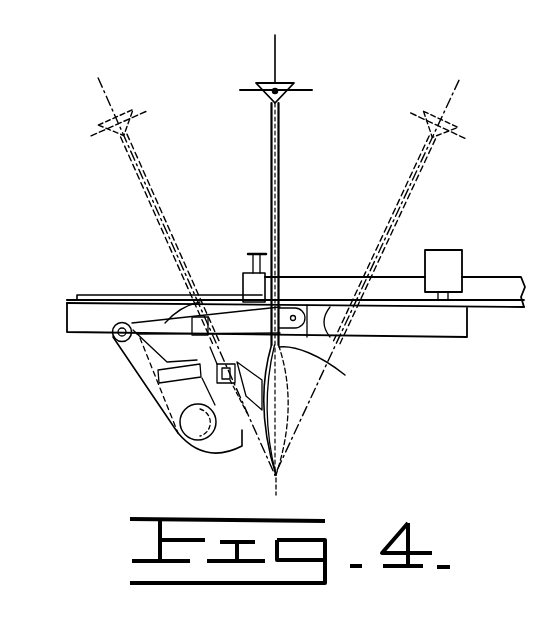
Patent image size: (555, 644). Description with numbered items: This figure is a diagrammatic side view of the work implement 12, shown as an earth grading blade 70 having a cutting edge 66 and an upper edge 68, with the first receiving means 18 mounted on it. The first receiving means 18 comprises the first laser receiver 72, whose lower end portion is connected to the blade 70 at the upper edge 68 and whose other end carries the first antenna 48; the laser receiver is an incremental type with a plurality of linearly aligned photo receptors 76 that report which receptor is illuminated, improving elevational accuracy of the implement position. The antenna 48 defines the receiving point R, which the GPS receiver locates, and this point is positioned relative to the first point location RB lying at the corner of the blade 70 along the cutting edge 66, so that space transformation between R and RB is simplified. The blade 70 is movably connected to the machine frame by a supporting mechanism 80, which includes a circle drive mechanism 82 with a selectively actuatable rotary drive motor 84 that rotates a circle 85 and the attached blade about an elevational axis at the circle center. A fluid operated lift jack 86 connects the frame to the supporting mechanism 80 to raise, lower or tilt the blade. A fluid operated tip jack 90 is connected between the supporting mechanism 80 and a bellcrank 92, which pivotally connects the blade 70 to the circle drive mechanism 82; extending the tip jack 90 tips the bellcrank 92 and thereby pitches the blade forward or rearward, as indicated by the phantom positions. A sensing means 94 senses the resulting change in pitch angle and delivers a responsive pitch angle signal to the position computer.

The first antenna 48 is at (256, 84).
The receiving point R is at (278, 82).
The first laser receiver 72 is at (279, 138).
The first receiving means 18 is at (286, 173).
The photo receptors 76 is at (279, 212).
The lift jack 86 is at (248, 273).
The tip jack 90 is at (220, 302).
The circle drive mechanism 82 is at (332, 300).
The rotary drive motor 84 is at (462, 256).
The supporting mechanism 80 is at (500, 285).
The circle 85 is at (440, 333).
The upper edge 68 is at (345, 375).
The work implement 12 is at (330, 417).
The cutting edge 66 is at (288, 468).
The first point location RB is at (282, 476).
The earth grading blade 70 is at (262, 458).
The bellcrank 92 is at (150, 397).
The sensing means 94 is at (192, 425).